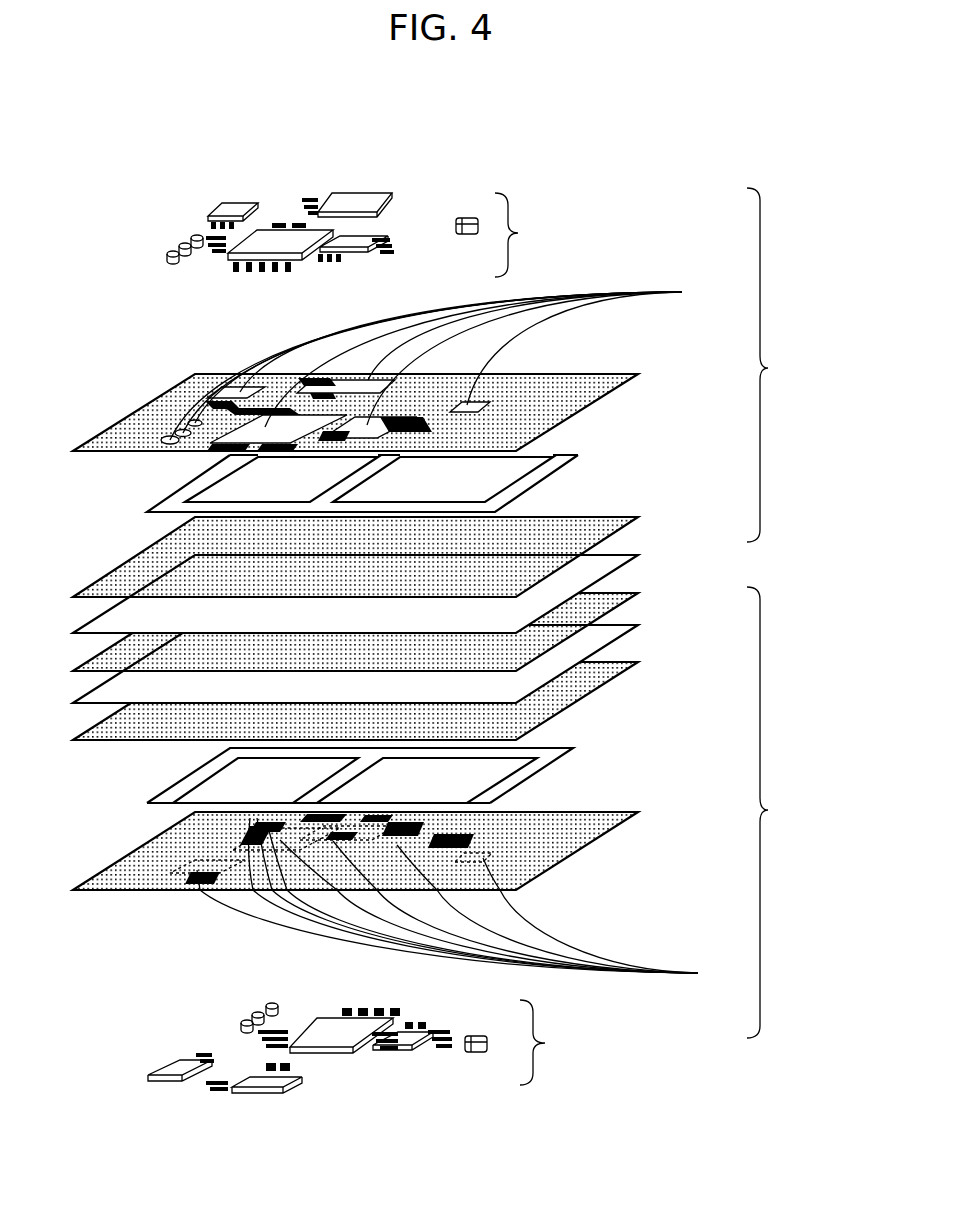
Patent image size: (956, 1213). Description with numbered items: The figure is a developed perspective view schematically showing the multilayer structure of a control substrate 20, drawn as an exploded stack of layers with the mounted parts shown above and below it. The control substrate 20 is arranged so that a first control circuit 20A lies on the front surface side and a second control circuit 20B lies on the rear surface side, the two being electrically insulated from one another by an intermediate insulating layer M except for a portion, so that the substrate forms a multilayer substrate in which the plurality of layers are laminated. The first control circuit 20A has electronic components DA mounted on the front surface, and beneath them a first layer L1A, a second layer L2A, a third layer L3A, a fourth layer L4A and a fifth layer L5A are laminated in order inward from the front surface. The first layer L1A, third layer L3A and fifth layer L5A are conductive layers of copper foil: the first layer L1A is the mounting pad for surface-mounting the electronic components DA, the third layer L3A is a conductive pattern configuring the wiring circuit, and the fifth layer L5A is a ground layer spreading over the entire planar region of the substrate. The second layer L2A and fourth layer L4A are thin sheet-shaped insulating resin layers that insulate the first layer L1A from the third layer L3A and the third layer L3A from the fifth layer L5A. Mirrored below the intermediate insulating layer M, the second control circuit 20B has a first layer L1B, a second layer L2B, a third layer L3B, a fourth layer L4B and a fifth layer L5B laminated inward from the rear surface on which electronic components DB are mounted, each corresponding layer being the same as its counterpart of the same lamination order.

The control substrate 20 is at (728, 138).
The first control circuit 20A is at (784, 365).
The second control circuit 20B is at (784, 812).
The electronic components DA is at (518, 233).
The electronic components DB is at (545, 1043).
The first layer L1A is at (456, 359).
The second layer L2A is at (640, 375).
The third layer L3A is at (573, 457).
The fourth layer L4A is at (638, 517).
The fifth layer L5A is at (638, 556).
The intermediate insulating layer M is at (638, 593).
The fifth layer L5B is at (638, 626).
The fourth layer L4B is at (638, 662).
The third layer L3B is at (573, 748).
The second layer L2B is at (638, 813).
The first layer L1B is at (475, 904).